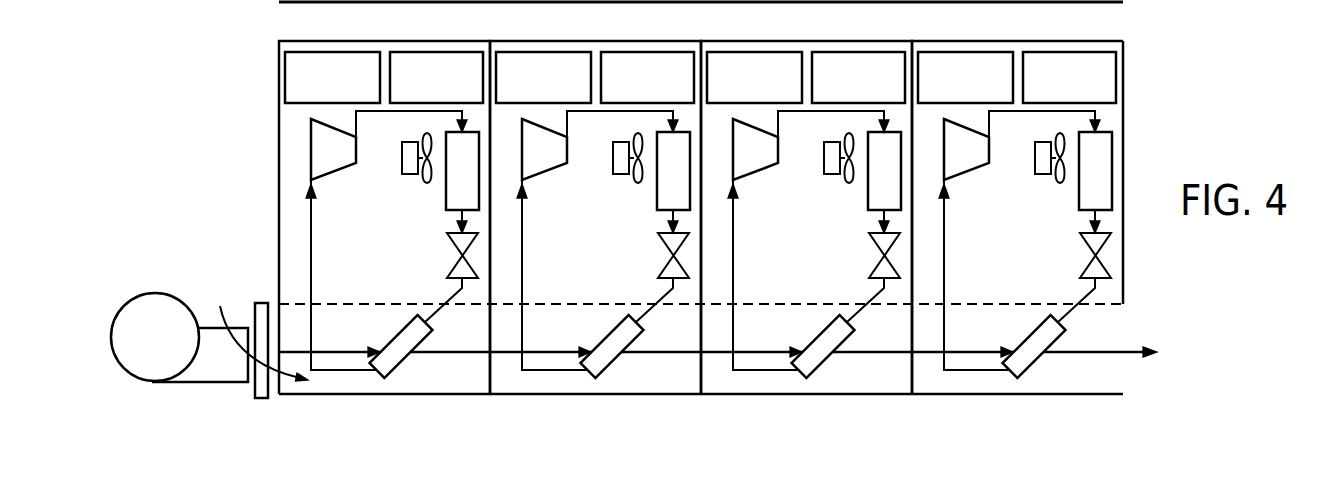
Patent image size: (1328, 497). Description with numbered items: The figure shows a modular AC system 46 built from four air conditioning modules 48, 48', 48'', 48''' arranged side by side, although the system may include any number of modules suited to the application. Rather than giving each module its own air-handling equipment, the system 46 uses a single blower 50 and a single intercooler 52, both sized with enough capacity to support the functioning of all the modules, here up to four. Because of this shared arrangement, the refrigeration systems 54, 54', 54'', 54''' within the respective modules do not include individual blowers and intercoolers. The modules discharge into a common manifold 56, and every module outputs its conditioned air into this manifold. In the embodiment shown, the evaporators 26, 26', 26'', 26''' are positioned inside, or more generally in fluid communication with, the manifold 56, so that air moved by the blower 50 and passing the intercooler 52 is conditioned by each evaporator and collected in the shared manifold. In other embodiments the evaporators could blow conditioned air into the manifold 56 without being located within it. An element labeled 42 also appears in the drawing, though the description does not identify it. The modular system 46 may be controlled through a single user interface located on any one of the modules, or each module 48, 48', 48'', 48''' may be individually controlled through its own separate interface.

The evaporator 26 is at (392, 346).
The evaporator 26' is at (603, 346).
The evaporator 26'' is at (814, 346).
The evaporator 26''' is at (1025, 346).
The fluid conduit 42 is at (548, 4).
The modular AC system 46 is at (272, 30).
The module 48 is at (384, 202).
The module 48' is at (595, 202).
The module 48'' is at (806, 202).
The module 48''' is at (1017, 202).
The blower 50 is at (186, 302).
The intercooler 52 is at (260, 303).
The refrigeration system 54 is at (358, 170).
The refrigeration system 54' is at (573, 170).
The refrigeration system 54'' is at (787, 170).
The refrigeration system 54''' is at (1001, 170).
The common manifold 56 is at (257, 331).